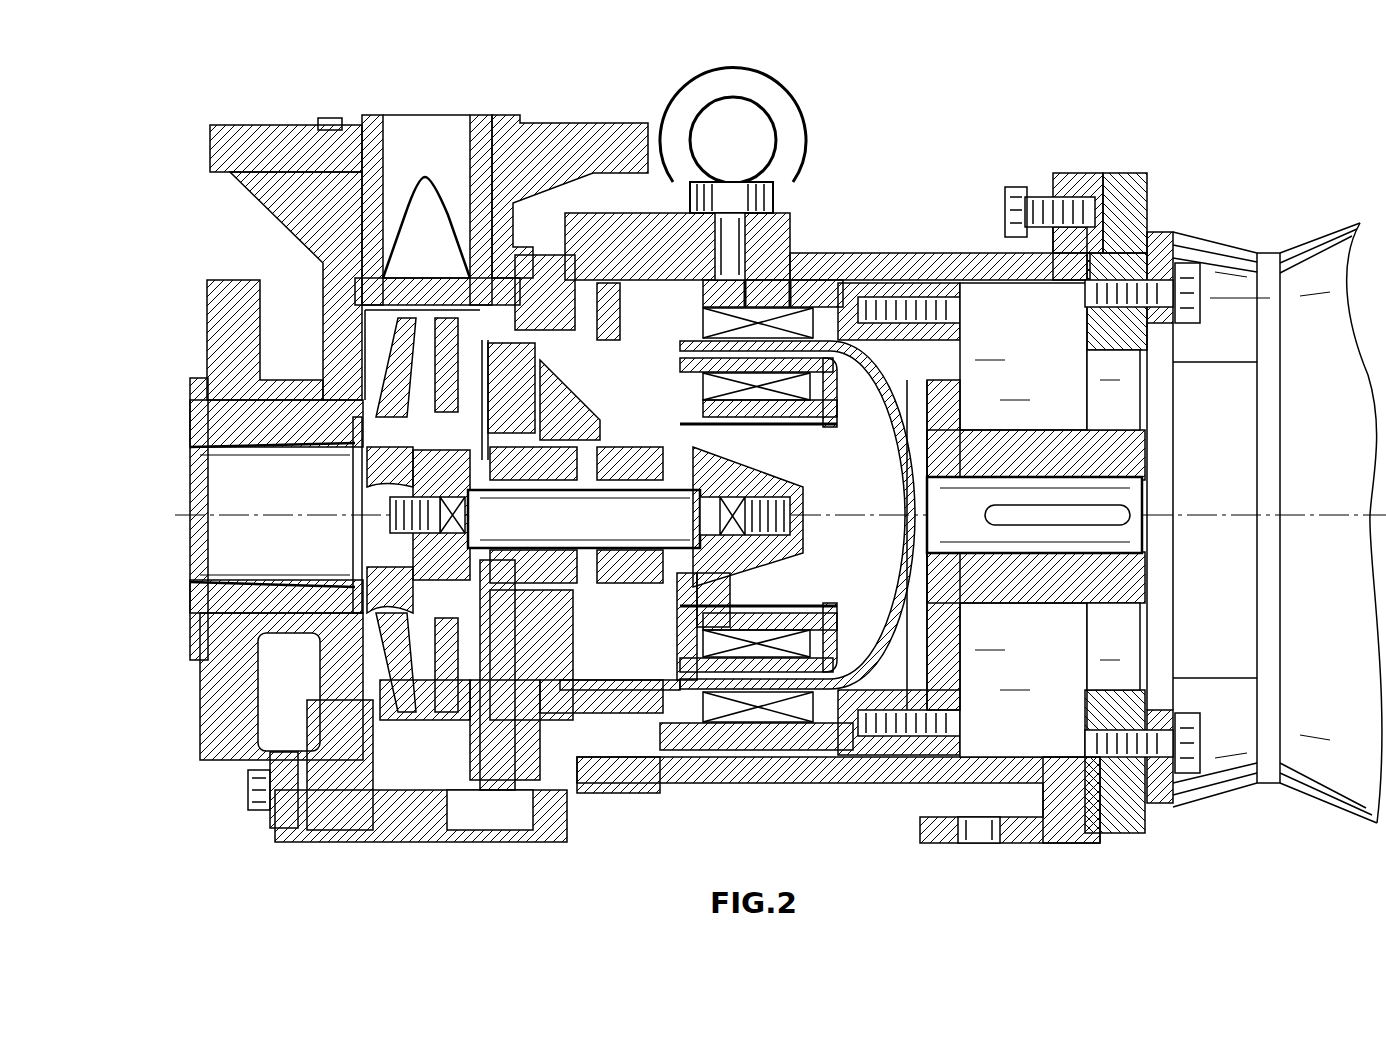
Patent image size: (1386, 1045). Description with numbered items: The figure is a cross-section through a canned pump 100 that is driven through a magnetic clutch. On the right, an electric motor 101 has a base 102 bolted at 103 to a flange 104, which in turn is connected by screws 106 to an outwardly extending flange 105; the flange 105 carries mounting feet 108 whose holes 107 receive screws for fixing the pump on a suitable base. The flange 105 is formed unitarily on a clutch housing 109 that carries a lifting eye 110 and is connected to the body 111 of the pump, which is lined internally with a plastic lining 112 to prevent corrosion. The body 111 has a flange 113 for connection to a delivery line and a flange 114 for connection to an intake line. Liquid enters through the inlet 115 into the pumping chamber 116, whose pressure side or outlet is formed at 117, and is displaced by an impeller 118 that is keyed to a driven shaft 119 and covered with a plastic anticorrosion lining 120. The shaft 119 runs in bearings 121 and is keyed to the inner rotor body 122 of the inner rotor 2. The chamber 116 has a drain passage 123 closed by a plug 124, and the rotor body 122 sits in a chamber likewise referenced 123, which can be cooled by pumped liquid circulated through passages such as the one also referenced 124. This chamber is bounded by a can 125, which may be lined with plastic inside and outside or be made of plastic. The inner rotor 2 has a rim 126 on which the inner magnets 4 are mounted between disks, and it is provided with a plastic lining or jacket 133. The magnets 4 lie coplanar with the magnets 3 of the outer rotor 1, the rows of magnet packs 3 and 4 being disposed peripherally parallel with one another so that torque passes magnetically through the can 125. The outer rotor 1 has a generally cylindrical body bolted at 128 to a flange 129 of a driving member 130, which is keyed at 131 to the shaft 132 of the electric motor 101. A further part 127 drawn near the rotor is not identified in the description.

The outer rotor 1 is at (655, 545).
The inner rotor 2 is at (770, 355).
The magnet packs of the outer rotor 3 is at (727, 763).
The inner magnets 4 is at (760, 763).
The pump 100 is at (1124, 160).
The electric motor 101 is at (1327, 233).
The base 102 is at (1160, 235).
The bolts 103 is at (1200, 290).
The flange 104 is at (1130, 178).
The outwardly extending flange 105 is at (1073, 170).
The screws 106 is at (1035, 187).
The holes 107 is at (960, 838).
The mounting feet 108 is at (1023, 827).
The clutch housing 109 is at (832, 258).
The lifting eye 110 is at (685, 105).
The pump body 111 is at (285, 213).
The plastic lining 112 is at (193, 582).
The delivery flange 113 is at (232, 125).
The intake flange 114 is at (215, 742).
The inlet 115 is at (193, 442).
The pumping chamber 116 is at (413, 730).
The outlet 117 is at (428, 195).
The impeller 118 is at (367, 581).
The driven shaft 119 is at (633, 780).
The plastic anticorrosion lining 120 is at (410, 423).
The bearings 121 is at (513, 713).
The inner rotor body 122 is at (760, 472).
The drain passage 123 is at (657, 399).
The plug 124 is at (532, 290).
The can 125 is at (645, 342).
The rim 126 is at (893, 300).
The rotor winding 127 is at (813, 745).
The bolts 128 is at (978, 325).
The flange of the driving member 129 is at (968, 408).
The driving member 130 is at (1015, 607).
The key 131 is at (1110, 500).
The motor shaft 132 is at (1103, 560).
The plastic lining or jacket 133 is at (797, 540).